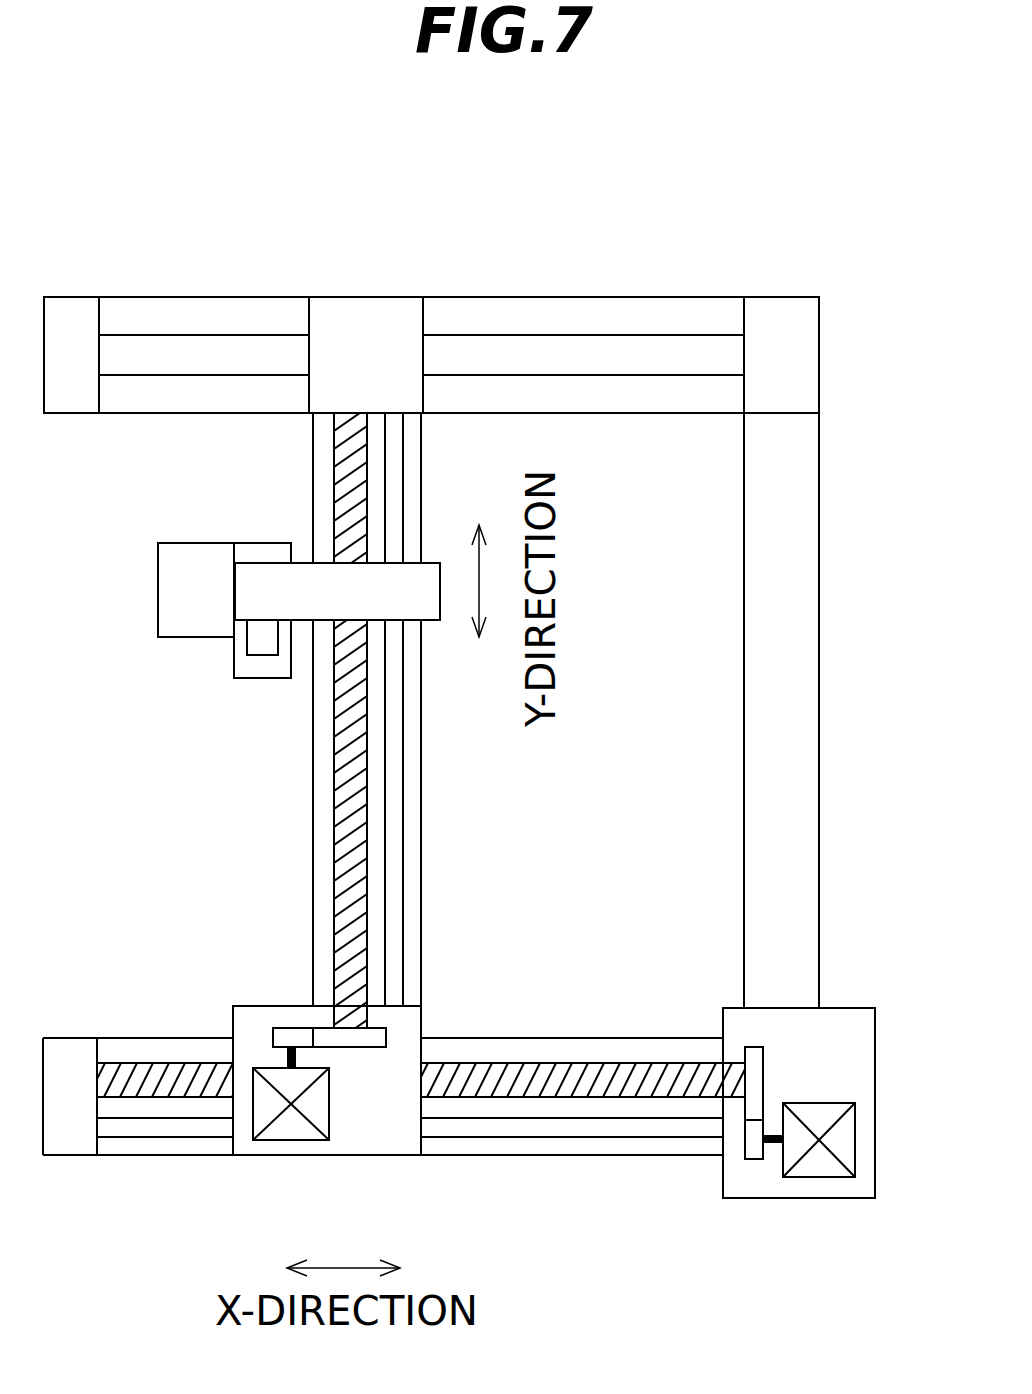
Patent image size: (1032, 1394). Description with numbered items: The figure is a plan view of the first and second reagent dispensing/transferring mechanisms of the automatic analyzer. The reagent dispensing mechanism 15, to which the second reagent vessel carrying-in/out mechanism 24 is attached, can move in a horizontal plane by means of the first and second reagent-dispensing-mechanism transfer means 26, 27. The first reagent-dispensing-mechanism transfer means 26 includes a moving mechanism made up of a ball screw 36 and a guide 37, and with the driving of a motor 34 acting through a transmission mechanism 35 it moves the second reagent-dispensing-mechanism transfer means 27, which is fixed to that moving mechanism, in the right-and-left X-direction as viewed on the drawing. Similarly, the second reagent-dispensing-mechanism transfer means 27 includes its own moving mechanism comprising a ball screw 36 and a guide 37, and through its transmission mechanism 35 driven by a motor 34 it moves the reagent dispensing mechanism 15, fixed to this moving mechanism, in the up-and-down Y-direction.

The reagent dispensing mechanism 15 is at (172, 561).
The second reagent vessel carrying-in/out mechanism 24 is at (233, 678).
The first reagent-dispensing-mechanism transfer means 26 is at (148, 1170).
The second reagent-dispensing-mechanism transfer means 27 is at (421, 803).
The motor 34 is at (289, 1125).
The transmission mechanism 35 is at (250, 1012).
The ball screw 36 is at (334, 896).
The guide 37 is at (403, 925).